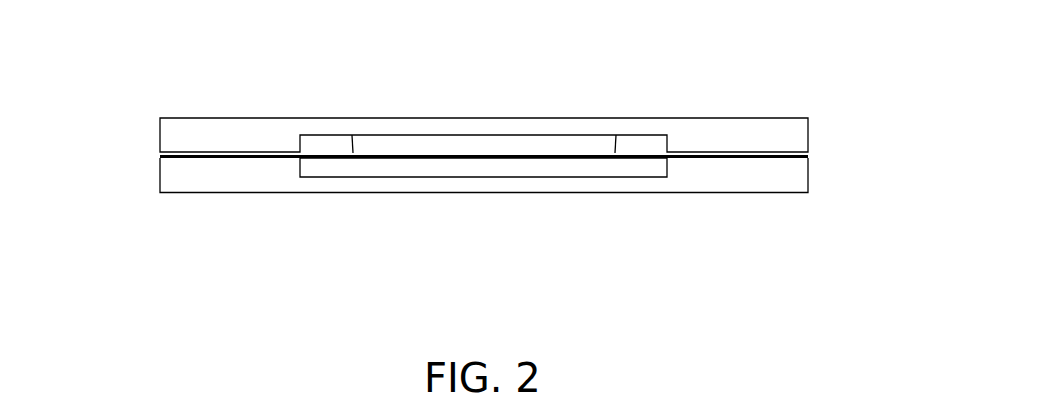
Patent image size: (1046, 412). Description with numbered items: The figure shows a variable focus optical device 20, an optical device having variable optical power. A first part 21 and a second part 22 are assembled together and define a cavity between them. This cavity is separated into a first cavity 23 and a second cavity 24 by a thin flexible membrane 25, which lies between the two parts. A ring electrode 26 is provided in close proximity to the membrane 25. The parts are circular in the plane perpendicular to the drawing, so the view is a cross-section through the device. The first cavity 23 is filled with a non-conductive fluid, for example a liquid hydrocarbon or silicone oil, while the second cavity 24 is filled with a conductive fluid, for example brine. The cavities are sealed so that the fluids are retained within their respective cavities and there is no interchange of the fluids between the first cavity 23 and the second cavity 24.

The variable focus optical device 20 is at (493, 153).
The first part 21 is at (780, 142).
The second part 22 is at (780, 176).
The first cavity 23 is at (490, 142).
The second cavity 24 is at (625, 176).
The thin flexible membrane 25 is at (327, 157).
The ring electrode 26 is at (373, 148).